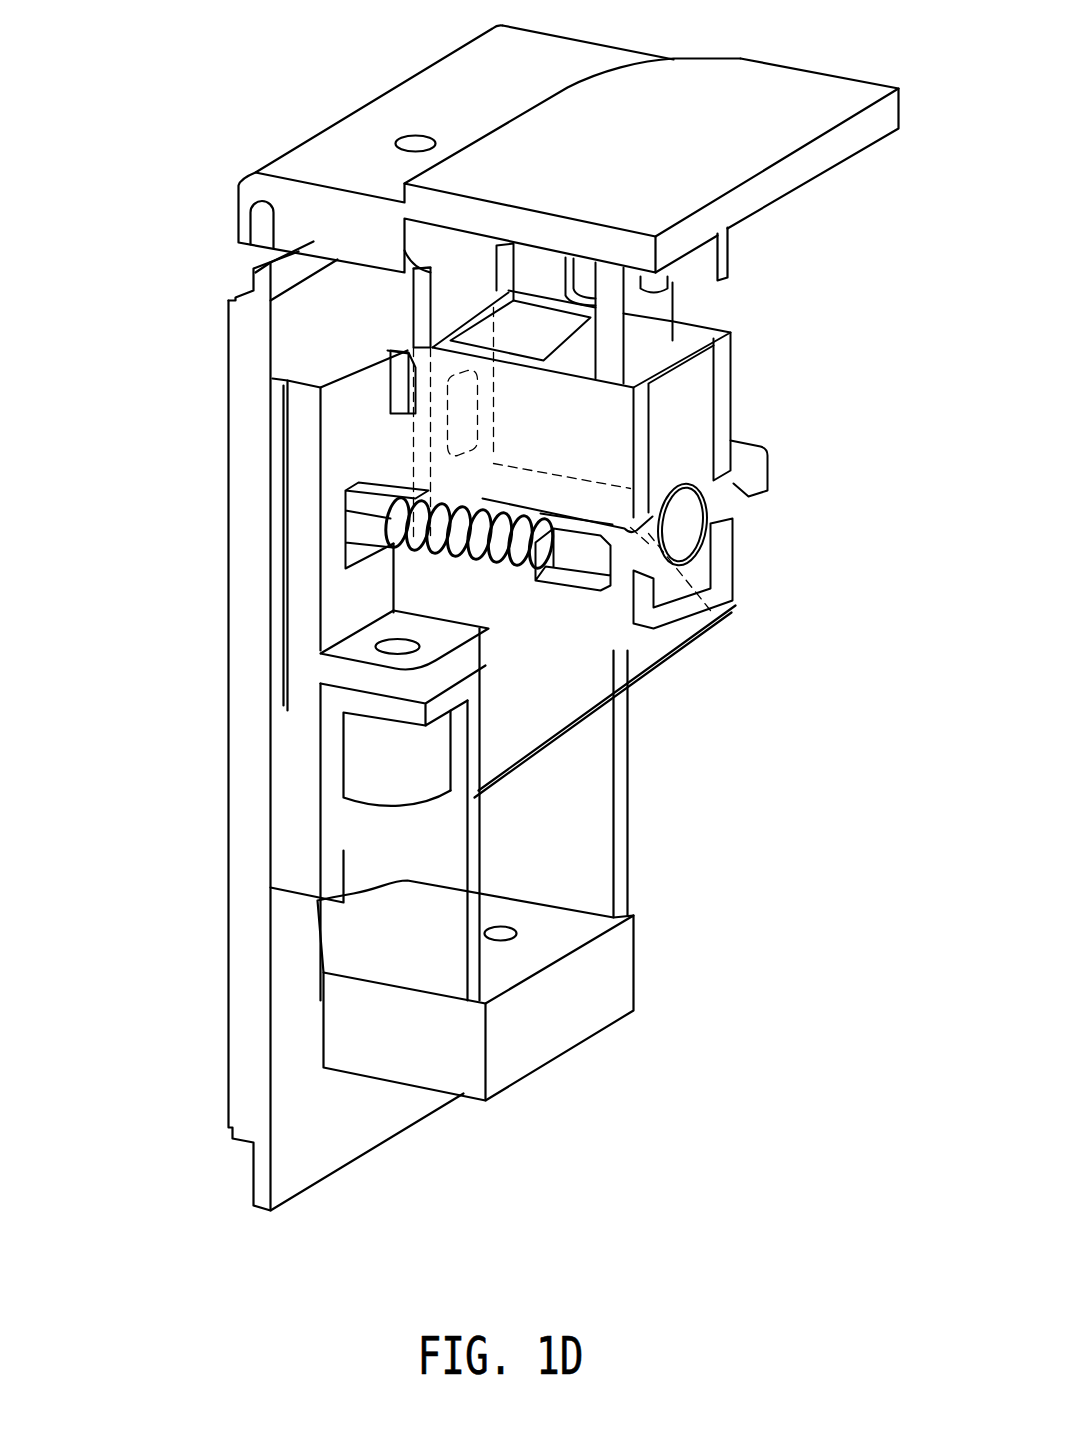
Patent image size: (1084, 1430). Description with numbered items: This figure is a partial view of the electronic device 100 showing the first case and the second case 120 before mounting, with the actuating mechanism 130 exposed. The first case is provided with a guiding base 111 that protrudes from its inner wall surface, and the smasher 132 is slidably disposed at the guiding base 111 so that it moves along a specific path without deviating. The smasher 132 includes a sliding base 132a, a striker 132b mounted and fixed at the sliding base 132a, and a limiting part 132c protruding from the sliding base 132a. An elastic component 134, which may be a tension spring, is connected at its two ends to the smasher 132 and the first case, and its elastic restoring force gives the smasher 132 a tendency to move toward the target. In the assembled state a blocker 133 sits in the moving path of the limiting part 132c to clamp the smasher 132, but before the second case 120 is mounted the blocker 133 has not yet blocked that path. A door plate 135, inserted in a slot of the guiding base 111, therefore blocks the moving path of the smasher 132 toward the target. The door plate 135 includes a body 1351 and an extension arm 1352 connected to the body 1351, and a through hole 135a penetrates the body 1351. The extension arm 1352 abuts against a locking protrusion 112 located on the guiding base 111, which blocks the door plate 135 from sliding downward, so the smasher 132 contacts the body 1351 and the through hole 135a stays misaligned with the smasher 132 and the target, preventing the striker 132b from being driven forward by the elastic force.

The electronic device 100 is at (871, 1246).
The guiding base 111 is at (560, 702).
The locking protrusion 112 is at (410, 355).
The second case 120 is at (802, 85).
The actuating mechanism 130 is at (857, 410).
The smasher 132 is at (682, 471).
The sliding base 132a is at (687, 435).
The striker 132b is at (717, 613).
The limiting part 132c is at (700, 375).
The blocker 133 is at (658, 315).
The elastic component 134 is at (507, 570).
The door plate 135 is at (280, 404).
The body 1351 is at (440, 467).
The extension arm 1352 is at (400, 320).
The through hole 135a is at (447, 420).